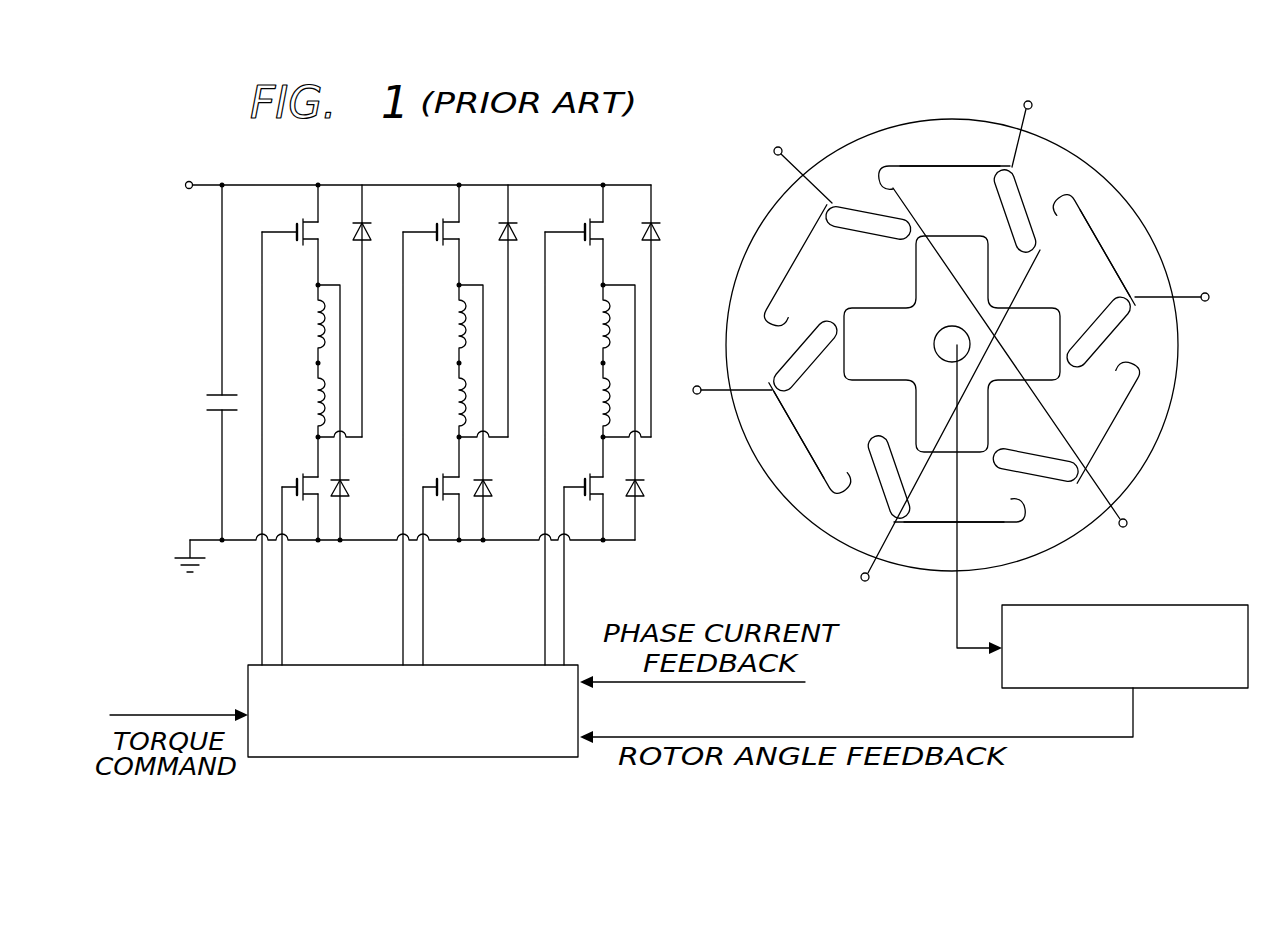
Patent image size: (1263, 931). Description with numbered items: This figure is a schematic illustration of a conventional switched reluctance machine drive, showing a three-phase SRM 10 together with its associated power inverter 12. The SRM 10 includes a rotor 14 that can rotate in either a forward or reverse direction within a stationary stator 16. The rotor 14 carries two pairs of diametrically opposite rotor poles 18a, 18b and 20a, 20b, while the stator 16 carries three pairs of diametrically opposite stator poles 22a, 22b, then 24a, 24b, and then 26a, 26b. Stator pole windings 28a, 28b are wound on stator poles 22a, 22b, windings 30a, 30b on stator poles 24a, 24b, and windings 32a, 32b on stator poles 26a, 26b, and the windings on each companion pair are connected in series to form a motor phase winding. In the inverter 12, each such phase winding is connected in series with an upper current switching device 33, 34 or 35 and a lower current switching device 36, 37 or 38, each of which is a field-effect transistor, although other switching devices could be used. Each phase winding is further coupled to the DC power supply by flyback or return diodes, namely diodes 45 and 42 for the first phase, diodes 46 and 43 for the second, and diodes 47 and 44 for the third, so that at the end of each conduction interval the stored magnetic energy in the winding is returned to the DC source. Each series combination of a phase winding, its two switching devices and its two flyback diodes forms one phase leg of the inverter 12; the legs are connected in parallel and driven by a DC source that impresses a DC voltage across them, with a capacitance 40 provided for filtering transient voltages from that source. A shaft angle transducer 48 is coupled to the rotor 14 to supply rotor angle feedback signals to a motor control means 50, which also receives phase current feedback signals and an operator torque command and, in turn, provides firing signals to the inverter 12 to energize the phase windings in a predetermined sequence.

The SRM 10 is at (1103, 130).
The power inverter 12 is at (577, 157).
The rotor 14 is at (1045, 380).
The stator 16 is at (762, 240).
The rotor pole 18a is at (862, 374).
The rotor pole 18b is at (1040, 305).
The rotor pole 20a is at (953, 248).
The rotor pole 20b is at (937, 462).
The stator pole 22a is at (800, 320).
The stator pole 22b is at (1130, 295).
The stator pole 24a is at (896, 163).
The stator pole 24b is at (1018, 545).
The stator pole 26a is at (1098, 177).
The stator pole 26b is at (790, 500).
The stator pole winding 28a is at (322, 326).
The stator pole winding 28b is at (320, 400).
The stator pole winding 30a is at (461, 326).
The stator pole winding 30b is at (461, 402).
The stator pole winding 32a is at (605, 326).
The stator pole winding 32b is at (605, 402).
The upper current switching device 33 is at (303, 222).
The upper current switching device 34 is at (443, 222).
The upper current switching device 35 is at (588, 222).
The lower current switching device 36 is at (312, 477).
The lower current switching device 37 is at (452, 477).
The lower current switching device 38 is at (596, 477).
The capacitance 40 is at (218, 392).
The flyback diode 42 is at (358, 233).
The flyback diode 43 is at (503, 233).
The flyback diode 44 is at (655, 241).
The flyback diode 45 is at (346, 487).
The flyback diode 46 is at (489, 487).
The flyback diode 47 is at (641, 497).
The shaft angle transducer 48 is at (1167, 688).
The motor control means 50 is at (500, 757).